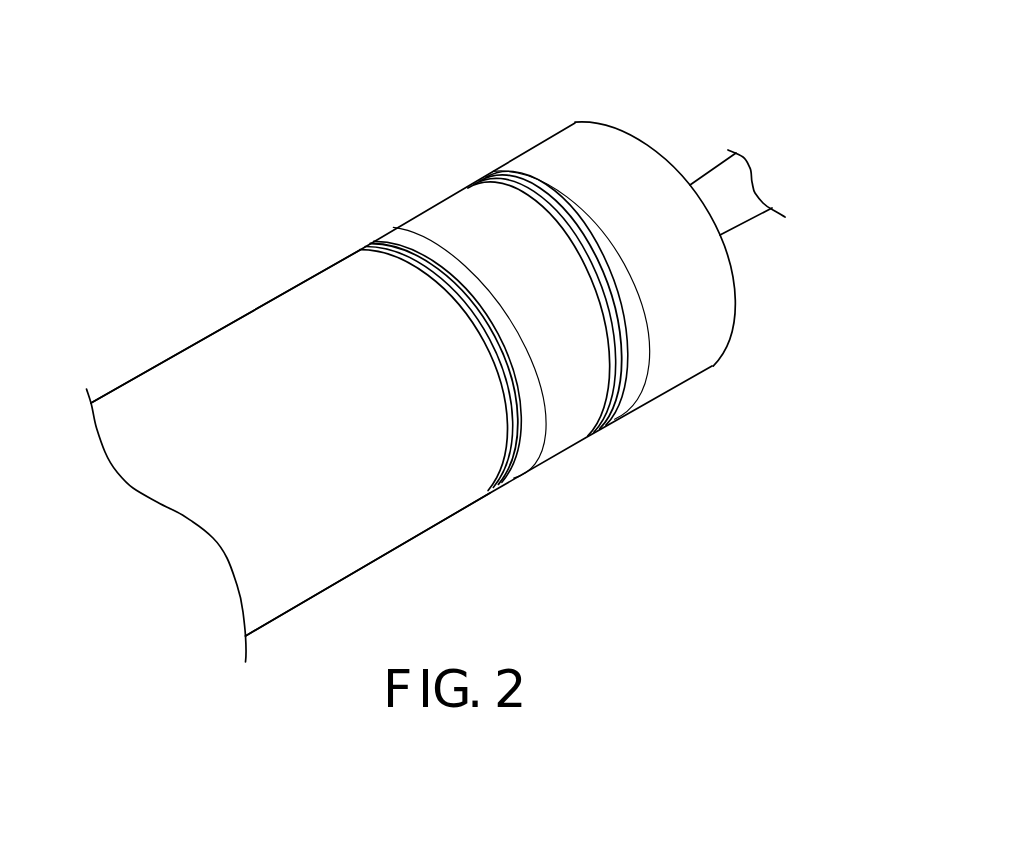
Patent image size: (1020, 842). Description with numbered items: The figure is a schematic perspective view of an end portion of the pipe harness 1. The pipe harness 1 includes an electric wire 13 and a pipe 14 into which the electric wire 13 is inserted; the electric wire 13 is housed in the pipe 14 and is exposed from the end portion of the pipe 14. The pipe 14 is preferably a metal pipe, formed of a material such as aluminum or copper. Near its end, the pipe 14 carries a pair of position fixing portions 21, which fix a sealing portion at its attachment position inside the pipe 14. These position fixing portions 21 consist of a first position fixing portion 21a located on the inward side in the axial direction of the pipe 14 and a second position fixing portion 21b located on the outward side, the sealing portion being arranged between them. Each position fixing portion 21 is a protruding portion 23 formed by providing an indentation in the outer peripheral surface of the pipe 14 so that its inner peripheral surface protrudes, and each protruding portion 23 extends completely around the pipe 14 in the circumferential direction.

The pipe harness 1 is at (127, 264).
The pipe 14 is at (205, 335).
The electric wire 13 is at (710, 170).
The position fixing portions 21 is at (522, 283).
The first position fixing portion 21a is at (463, 298).
The second position fixing portion 21b is at (557, 235).
The protruding portion 23 is at (496, 329).